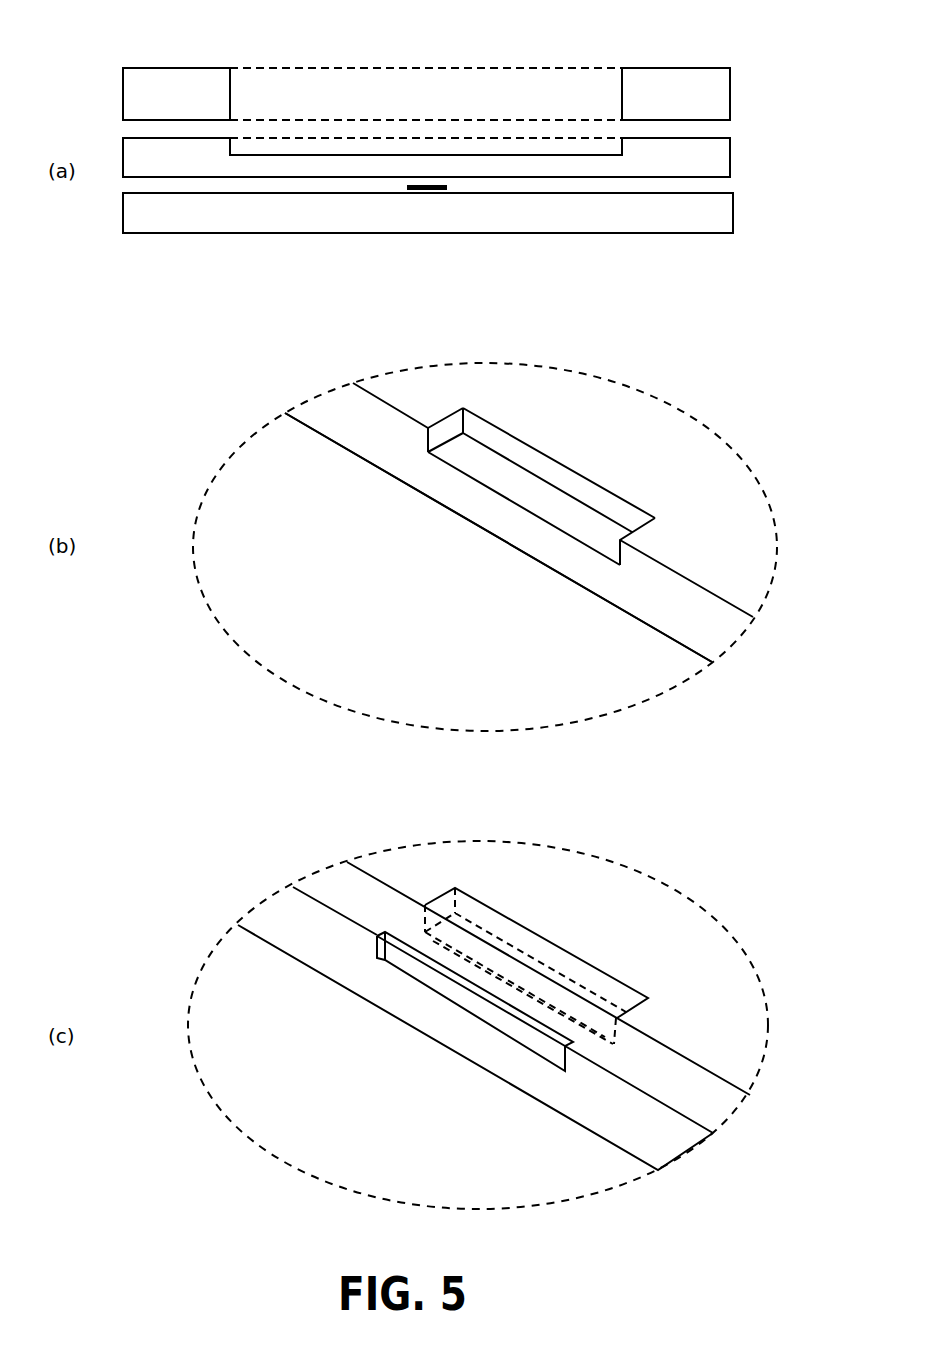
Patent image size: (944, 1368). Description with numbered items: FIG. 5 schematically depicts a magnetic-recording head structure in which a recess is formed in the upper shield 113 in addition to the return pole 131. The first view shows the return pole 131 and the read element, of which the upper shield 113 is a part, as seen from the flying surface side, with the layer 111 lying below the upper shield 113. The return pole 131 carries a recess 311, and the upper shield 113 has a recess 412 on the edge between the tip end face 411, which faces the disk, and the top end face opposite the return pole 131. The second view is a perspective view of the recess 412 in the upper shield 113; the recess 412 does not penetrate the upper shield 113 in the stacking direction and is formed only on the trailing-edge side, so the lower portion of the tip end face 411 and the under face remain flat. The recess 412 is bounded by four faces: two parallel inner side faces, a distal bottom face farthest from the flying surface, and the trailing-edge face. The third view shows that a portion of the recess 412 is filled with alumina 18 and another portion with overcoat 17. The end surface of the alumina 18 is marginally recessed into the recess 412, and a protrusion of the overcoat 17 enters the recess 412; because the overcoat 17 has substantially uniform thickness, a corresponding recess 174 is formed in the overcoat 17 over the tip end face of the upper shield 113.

The return pole 131 is at (730, 92).
The recess 311 is at (622, 93).
The upper shield 113 is at (730, 155).
The base plate 111 is at (733, 218).
The recess 412 is at (230, 147).
The tip end face 411 is at (680, 618).
The alumina 18 is at (470, 900).
The recess 174 is at (433, 990).
The overcoat 17 is at (661, 1141).